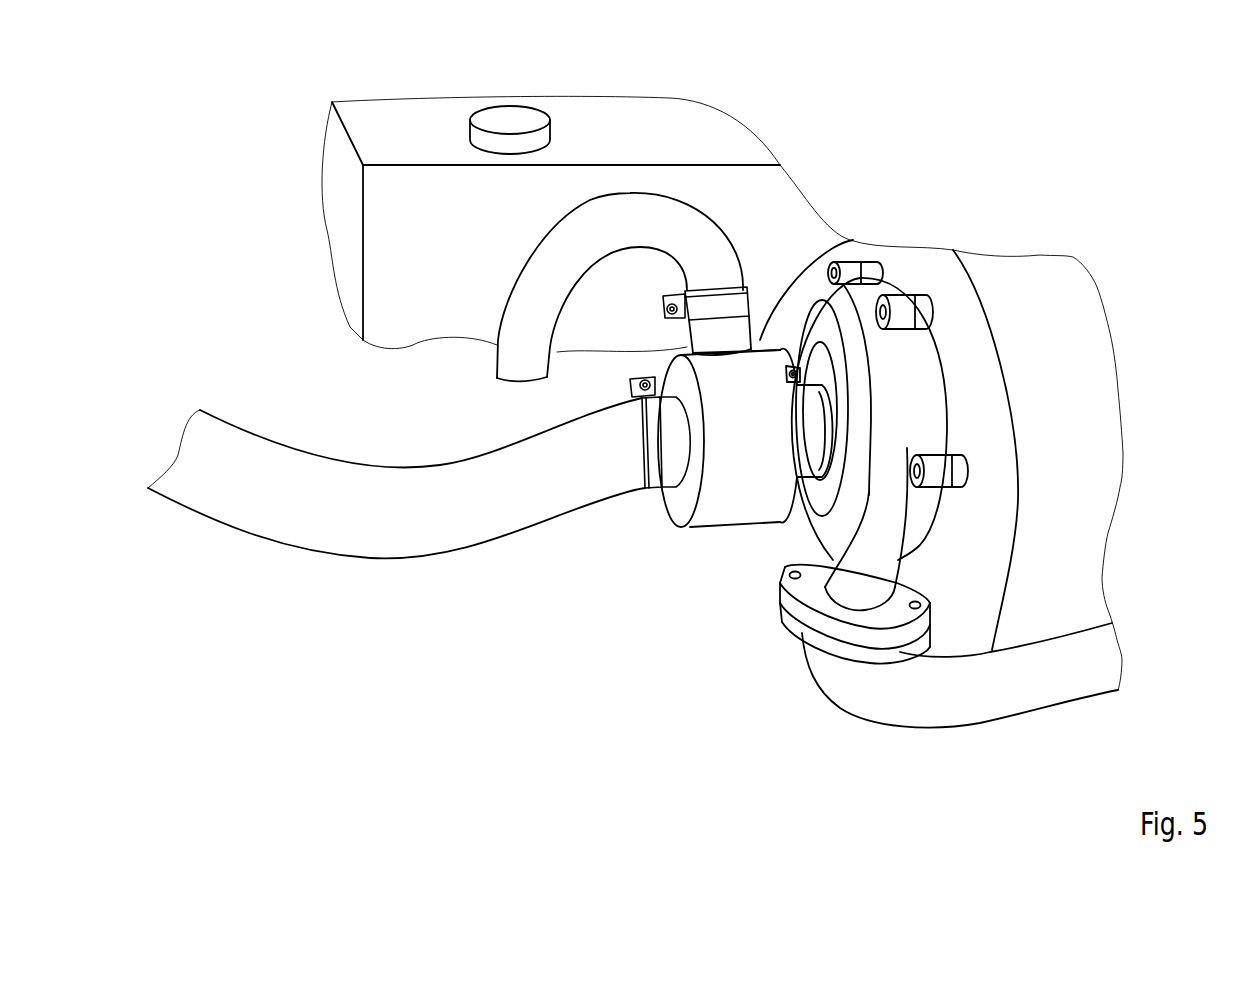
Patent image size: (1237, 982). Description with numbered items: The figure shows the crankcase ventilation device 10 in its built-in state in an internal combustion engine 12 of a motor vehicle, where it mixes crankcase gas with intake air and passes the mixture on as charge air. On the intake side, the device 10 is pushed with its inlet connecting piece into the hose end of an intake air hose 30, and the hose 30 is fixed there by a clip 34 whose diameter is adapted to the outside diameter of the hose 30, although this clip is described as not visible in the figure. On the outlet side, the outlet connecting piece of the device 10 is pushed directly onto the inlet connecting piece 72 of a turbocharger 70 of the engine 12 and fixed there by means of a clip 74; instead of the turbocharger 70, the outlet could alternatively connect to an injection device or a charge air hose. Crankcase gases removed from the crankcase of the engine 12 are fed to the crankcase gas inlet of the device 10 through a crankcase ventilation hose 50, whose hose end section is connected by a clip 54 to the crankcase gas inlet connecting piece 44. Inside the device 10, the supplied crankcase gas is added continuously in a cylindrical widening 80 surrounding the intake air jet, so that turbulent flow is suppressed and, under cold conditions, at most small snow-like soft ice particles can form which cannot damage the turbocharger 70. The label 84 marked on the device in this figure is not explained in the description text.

The crankcase ventilation device 10 is at (690, 486).
The internal combustion engine 12 is at (668, 135).
The intake air hose 30 is at (320, 482).
The clip 34 is at (662, 467).
The crankcase gas inlet connecting piece 44 is at (710, 335).
The crankcase ventilation hose 50 is at (543, 265).
The clip 54 is at (737, 305).
The turbocharger 70 is at (1055, 350).
The inlet connecting piece 72 is at (827, 426).
The clip 74 is at (803, 402).
The cylindrical widening 80 is at (735, 537).
The sensor housing 84 is at (766, 447).